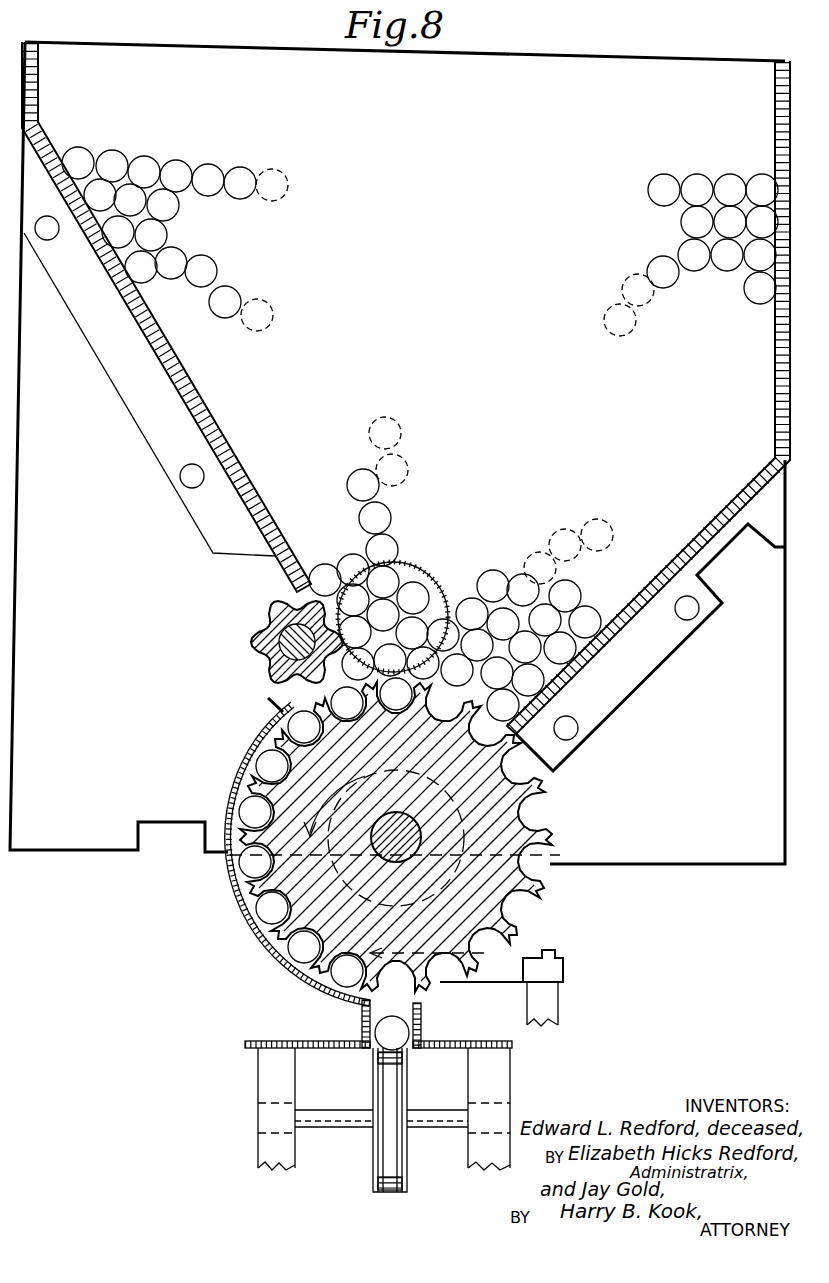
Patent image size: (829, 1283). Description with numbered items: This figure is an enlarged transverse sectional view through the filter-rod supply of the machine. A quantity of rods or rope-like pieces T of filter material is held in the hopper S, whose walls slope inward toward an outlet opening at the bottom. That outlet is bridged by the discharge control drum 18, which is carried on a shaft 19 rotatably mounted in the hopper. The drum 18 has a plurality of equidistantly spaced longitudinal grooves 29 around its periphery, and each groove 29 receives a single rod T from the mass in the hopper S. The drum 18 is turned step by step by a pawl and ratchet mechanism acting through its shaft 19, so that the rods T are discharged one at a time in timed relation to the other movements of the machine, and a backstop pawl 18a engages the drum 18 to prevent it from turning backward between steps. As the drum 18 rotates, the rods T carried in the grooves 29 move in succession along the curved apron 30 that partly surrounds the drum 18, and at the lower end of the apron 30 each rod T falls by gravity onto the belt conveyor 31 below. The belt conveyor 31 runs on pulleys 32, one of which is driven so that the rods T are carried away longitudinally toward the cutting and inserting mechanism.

The hopper S is at (250, 422).
The rods or rope-like pieces T is at (415, 598).
The discharge control drum 18 is at (540, 782).
The backstop pawl 18a is at (262, 628).
The shaft 19 is at (510, 823).
The longitudinal grooves 29 is at (508, 902).
The apron 30 is at (258, 927).
The belt conveyor 31 is at (385, 1060).
The pulleys 32 is at (388, 1155).